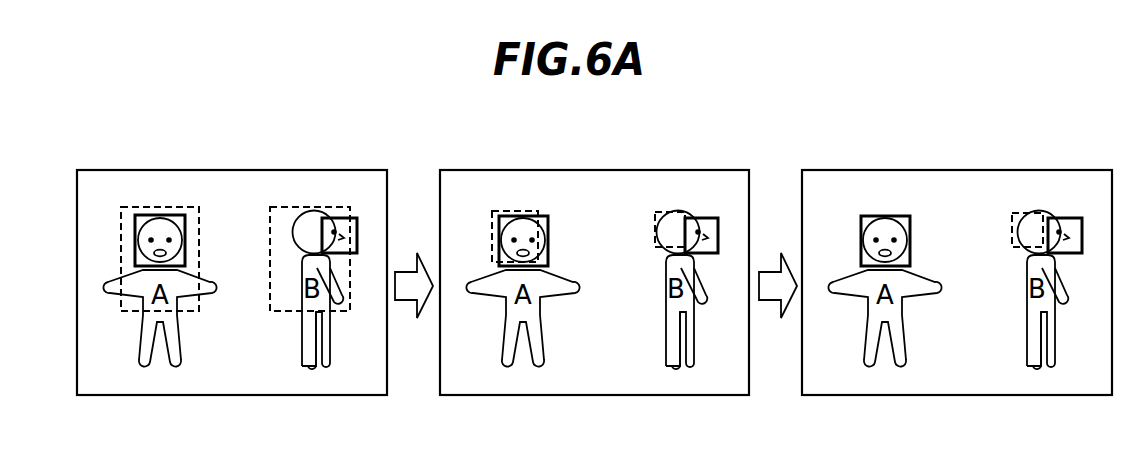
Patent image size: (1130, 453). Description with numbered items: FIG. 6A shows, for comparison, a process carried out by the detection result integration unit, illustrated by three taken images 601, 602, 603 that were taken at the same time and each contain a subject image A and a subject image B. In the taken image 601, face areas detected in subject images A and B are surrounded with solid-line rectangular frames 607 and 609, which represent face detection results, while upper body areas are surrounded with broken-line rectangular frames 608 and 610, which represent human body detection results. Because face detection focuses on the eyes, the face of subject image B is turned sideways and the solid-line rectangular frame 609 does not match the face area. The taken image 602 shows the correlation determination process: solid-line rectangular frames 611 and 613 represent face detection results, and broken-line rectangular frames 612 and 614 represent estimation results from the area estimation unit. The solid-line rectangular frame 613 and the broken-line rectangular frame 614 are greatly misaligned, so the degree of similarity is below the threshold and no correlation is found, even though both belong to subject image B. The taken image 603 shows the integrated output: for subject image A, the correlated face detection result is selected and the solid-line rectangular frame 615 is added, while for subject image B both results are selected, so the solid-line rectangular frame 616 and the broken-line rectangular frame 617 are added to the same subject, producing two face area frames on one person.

The taken image 601 is at (233, 395).
The taken image 602 is at (595, 395).
The taken image 603 is at (960, 395).
The solid-line rectangular frame 607 is at (180, 213).
The broken-line rectangular frame 608 is at (132, 203).
The solid-line rectangular frame 609 is at (343, 217).
The broken-line rectangular frame 610 is at (282, 203).
The solid-line rectangular frame 611 is at (538, 215).
The broken-line rectangular frame 612 is at (499, 208).
The solid-line rectangular frame 613 is at (705, 218).
The broken-line rectangular frame 614 is at (657, 208).
The solid-line rectangular frame 615 is at (907, 215).
The solid-line rectangular frame 616 is at (1067, 218).
The broken-line rectangular frame 617 is at (1024, 210).